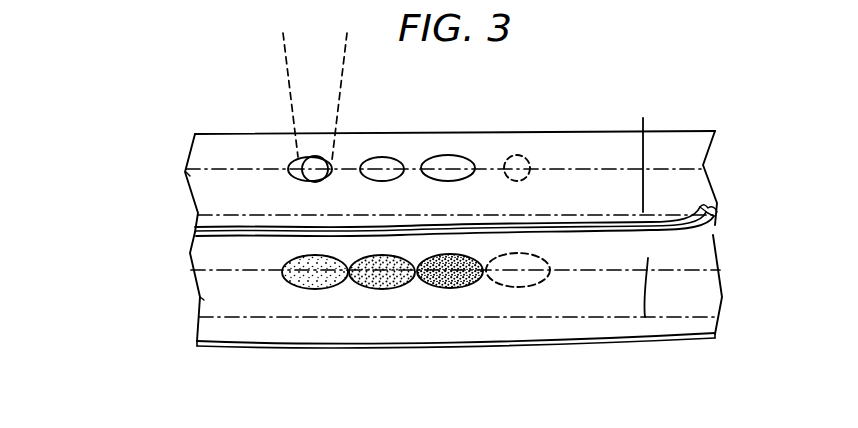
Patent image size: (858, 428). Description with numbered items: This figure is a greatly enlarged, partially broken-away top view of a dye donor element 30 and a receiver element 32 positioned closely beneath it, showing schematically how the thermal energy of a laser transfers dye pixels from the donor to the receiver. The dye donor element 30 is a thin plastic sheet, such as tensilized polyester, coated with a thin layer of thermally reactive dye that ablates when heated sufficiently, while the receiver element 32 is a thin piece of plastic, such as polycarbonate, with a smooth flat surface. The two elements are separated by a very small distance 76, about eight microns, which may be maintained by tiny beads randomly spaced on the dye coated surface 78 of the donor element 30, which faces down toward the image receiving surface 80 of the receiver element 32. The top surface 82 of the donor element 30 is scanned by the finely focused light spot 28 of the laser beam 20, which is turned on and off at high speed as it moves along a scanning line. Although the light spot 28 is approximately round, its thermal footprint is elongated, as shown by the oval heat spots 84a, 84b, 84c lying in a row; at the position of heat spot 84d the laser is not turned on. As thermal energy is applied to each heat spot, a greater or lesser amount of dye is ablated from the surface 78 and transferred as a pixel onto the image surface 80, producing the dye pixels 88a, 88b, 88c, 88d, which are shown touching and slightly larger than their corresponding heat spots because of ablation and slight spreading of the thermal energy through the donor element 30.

The laser beam 20 is at (289, 78).
The focused light spot 28 is at (316, 156).
The dye donor element 30 is at (691, 147).
The receiver element 32 is at (704, 288).
The separation distance 76 is at (225, 238).
The dye coated surface 78 is at (702, 218).
The image receiving surface 80 is at (212, 297).
The top surface 82 is at (203, 186).
The heat spot 84a is at (331, 163).
The heat spot 84b is at (387, 158).
The heat spot 84c is at (458, 156).
The heat spot 84d is at (524, 157).
The dye pixel 88a is at (339, 289).
The dye pixel 88b is at (404, 289).
The dye pixel 88c is at (470, 287).
The dye pixel 88d is at (538, 284).